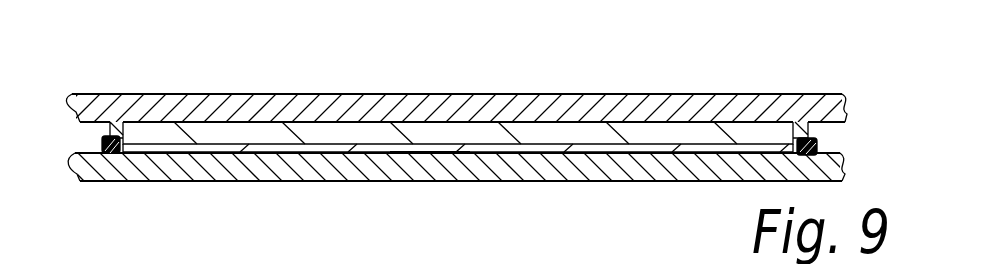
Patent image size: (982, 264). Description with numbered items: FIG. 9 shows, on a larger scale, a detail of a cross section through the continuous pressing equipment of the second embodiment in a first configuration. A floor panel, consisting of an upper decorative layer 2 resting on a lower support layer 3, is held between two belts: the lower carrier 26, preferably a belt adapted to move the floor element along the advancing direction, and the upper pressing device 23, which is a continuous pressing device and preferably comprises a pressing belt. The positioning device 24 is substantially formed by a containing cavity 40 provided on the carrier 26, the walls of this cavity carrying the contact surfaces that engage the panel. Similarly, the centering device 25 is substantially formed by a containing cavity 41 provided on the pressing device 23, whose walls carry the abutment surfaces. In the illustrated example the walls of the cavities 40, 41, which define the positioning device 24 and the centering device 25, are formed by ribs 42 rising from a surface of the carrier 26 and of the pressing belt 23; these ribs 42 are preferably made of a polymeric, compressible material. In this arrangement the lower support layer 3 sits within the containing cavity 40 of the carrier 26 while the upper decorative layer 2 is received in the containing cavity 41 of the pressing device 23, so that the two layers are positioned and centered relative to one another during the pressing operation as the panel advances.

The upper decorative layer 2 is at (162, 134).
The lower support layer 3 is at (176, 148).
The pressing device 23 is at (823, 113).
The positioning device 24 is at (818, 143).
The centering device 25 is at (813, 129).
The carrier 26 is at (623, 175).
The containing cavity 40 is at (412, 163).
The containing cavity 41 is at (462, 106).
The ribs 42 is at (107, 132).